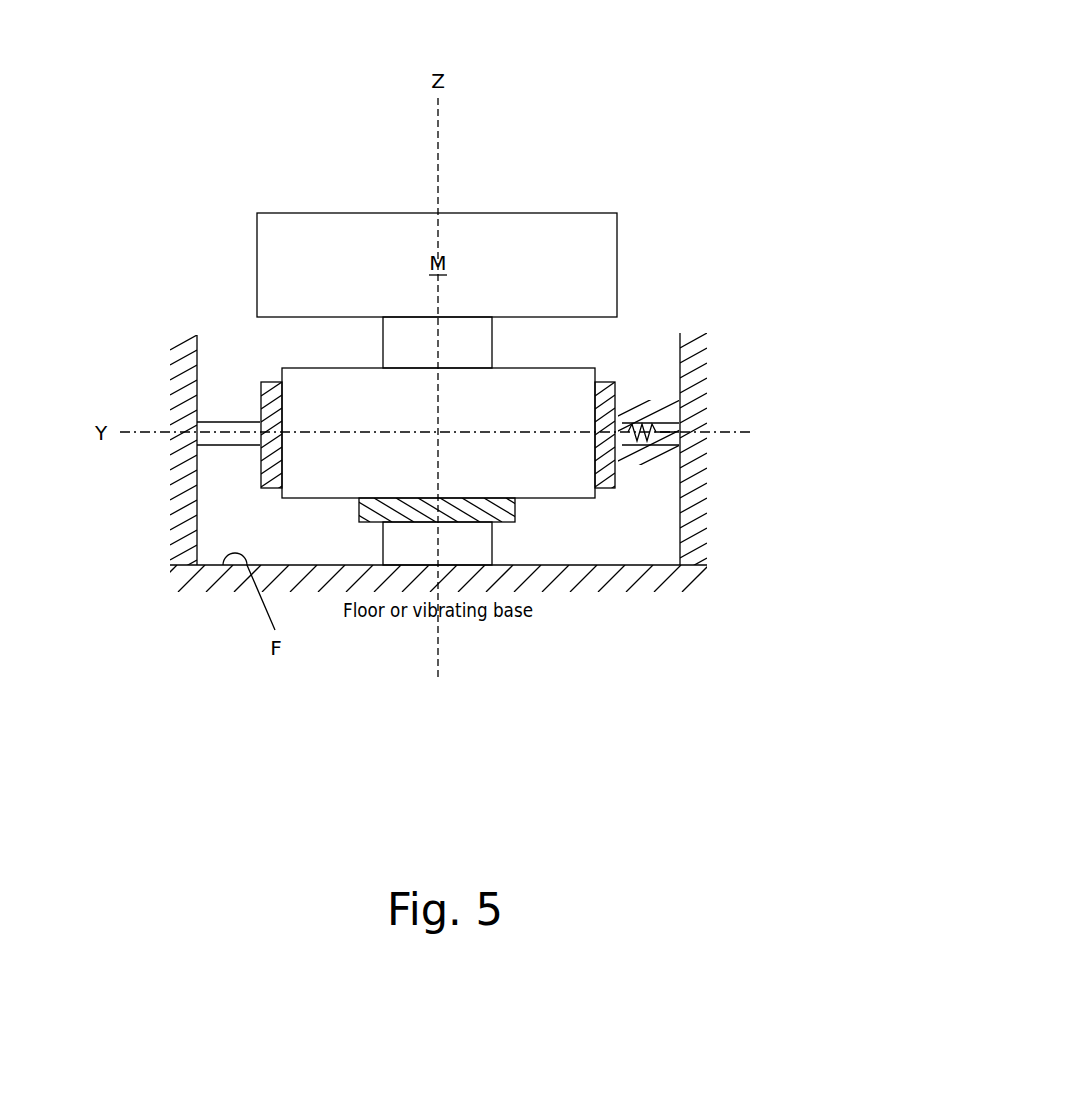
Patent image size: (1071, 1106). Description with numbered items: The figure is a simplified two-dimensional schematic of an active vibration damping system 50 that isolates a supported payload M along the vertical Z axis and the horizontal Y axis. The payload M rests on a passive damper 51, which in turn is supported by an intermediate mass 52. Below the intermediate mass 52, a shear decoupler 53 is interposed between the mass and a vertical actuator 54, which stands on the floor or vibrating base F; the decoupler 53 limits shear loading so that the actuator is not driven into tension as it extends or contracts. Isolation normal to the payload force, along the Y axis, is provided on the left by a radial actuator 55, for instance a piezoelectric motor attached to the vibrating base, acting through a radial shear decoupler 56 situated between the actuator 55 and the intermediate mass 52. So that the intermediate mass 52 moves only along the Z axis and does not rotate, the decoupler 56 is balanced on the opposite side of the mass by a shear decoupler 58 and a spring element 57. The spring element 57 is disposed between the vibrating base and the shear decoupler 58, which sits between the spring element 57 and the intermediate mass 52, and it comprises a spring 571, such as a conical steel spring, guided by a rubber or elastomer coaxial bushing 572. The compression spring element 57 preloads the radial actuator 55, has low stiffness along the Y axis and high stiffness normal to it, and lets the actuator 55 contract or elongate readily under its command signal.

The active vibration damping system 50 is at (633, 108).
The passive damper 51 is at (425, 353).
The intermediate mass 52 is at (425, 445).
The shear decoupler 53 is at (515, 512).
The vertical actuator 54 is at (425, 550).
The radial actuator 55 is at (222, 446).
The radial shear decoupler 56 is at (268, 381).
The spring element 57 is at (660, 393).
The spring 571 is at (650, 447).
The coaxial bushing 572 is at (682, 340).
The shear decoupler 58 is at (668, 338).